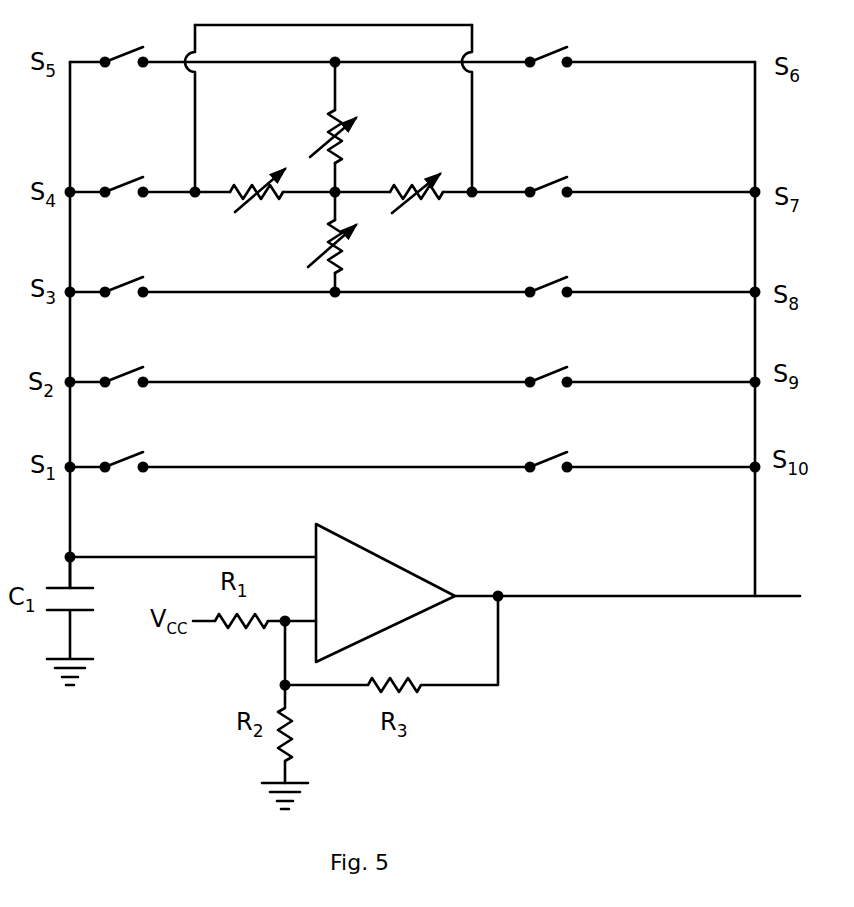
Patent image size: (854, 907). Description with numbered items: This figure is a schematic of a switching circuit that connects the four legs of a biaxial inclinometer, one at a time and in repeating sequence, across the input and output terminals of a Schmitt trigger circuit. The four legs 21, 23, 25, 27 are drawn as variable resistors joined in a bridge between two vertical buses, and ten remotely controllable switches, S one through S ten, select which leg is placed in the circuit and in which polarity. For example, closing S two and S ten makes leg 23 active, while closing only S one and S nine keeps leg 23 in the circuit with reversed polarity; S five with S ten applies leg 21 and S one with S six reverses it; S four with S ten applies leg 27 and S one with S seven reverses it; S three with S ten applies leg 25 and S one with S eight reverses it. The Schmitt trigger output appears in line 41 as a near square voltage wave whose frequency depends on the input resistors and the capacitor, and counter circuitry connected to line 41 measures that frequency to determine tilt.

The leg 21 is at (357, 147).
The leg 23 is at (258, 178).
The leg 25 is at (325, 230).
The leg 27 is at (400, 180).
The line 41 is at (632, 595).